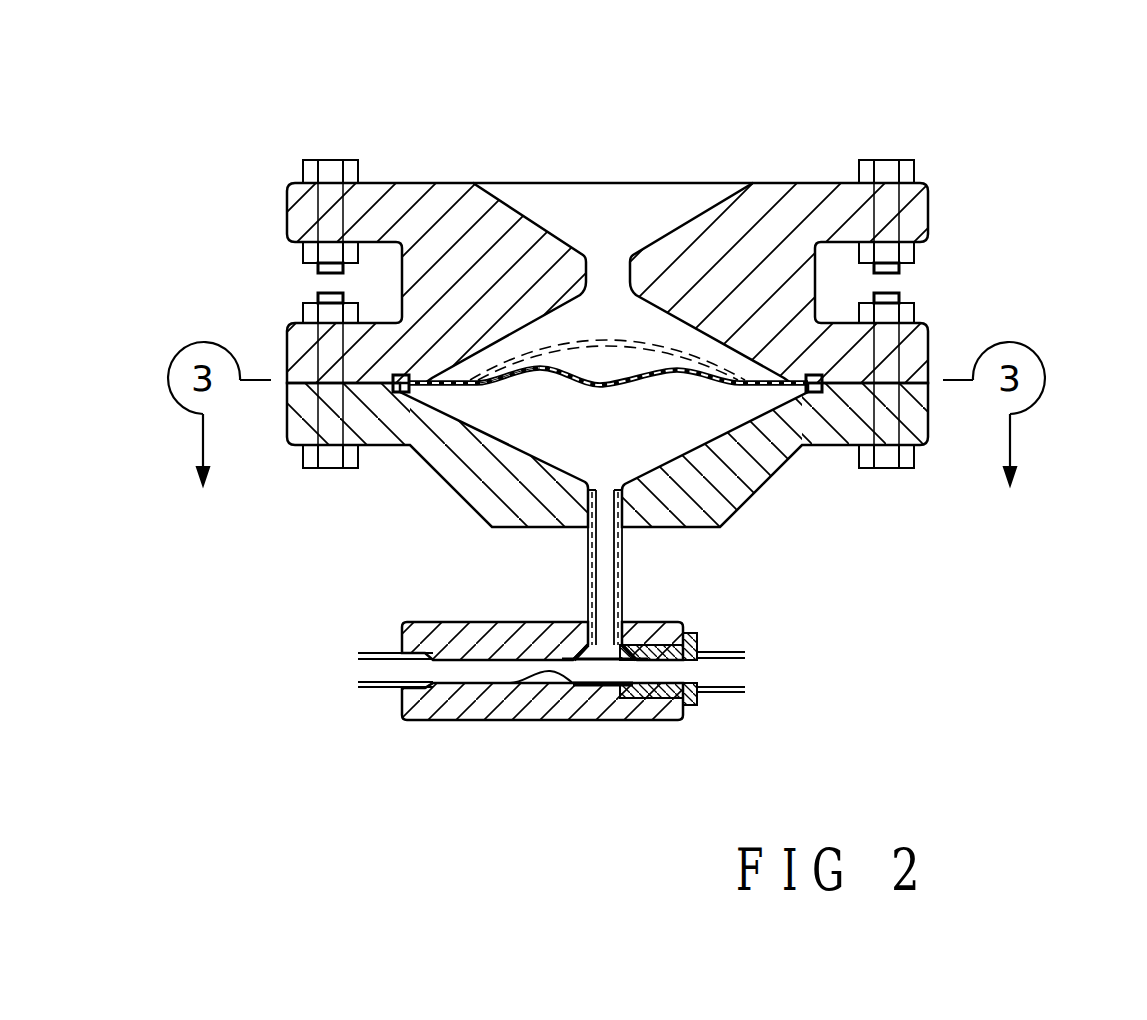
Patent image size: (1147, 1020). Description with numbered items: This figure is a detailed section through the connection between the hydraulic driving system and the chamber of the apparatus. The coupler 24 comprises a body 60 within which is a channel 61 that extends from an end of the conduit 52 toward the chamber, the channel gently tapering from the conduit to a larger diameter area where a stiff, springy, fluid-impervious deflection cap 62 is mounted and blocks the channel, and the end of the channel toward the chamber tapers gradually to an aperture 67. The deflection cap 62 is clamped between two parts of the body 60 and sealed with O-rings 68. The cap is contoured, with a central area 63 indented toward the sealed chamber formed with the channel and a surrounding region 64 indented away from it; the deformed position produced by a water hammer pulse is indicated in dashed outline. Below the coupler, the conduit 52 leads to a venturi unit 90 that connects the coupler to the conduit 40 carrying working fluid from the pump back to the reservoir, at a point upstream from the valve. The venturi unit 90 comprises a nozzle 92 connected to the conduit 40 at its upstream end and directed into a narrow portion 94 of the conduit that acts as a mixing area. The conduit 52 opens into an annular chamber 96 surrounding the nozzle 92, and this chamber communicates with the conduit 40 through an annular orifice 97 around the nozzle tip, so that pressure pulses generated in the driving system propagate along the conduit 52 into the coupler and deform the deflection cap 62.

The coupler 24 is at (982, 230).
The body 60 is at (935, 347).
The aperture 67 is at (605, 263).
The channel 61 is at (545, 428).
The deflection cap 62 is at (632, 388).
The central area 63 is at (625, 363).
The region 64 is at (500, 372).
The O-rings 68 is at (810, 375).
The conduit 52 is at (607, 560).
The venturi unit 90 is at (552, 618).
The nozzle 92 is at (588, 686).
The conduit 40 is at (360, 673).
The narrow portion 94 is at (412, 686).
The annular orifice 97 is at (543, 678).
The annular chamber 96 is at (573, 684).